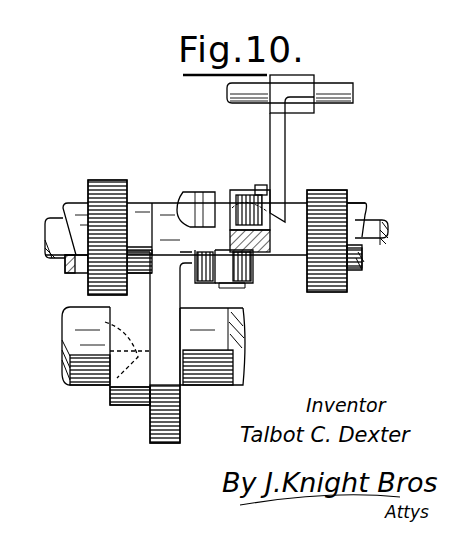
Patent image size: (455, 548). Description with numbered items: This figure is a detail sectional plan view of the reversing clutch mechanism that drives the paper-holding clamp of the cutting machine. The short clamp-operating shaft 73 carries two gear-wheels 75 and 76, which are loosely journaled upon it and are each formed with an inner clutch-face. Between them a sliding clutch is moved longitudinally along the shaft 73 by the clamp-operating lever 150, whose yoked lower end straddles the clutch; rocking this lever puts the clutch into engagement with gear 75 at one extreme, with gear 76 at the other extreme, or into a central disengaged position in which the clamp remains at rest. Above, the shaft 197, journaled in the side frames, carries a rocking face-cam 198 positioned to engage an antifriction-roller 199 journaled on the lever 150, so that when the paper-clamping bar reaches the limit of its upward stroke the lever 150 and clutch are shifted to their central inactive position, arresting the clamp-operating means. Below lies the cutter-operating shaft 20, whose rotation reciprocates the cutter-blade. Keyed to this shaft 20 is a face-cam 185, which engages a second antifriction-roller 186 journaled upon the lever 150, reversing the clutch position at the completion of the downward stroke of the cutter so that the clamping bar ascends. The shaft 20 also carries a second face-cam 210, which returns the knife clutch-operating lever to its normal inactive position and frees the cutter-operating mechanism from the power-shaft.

The cutter-operating shaft 20 is at (85, 350).
The clamp-operating shaft 73 is at (369, 234).
The gear-wheel 75 is at (105, 196).
The gear-wheel 76 is at (333, 198).
The clamp-operating lever 150 is at (288, 200).
The face-cam 185 is at (232, 286).
The antifriction-roller 186 is at (241, 278).
The shaft 197 is at (352, 75).
The rocking face-cam 198 is at (268, 186).
The antifriction-roller 199 is at (232, 198).
The second face-cam 210 is at (110, 322).